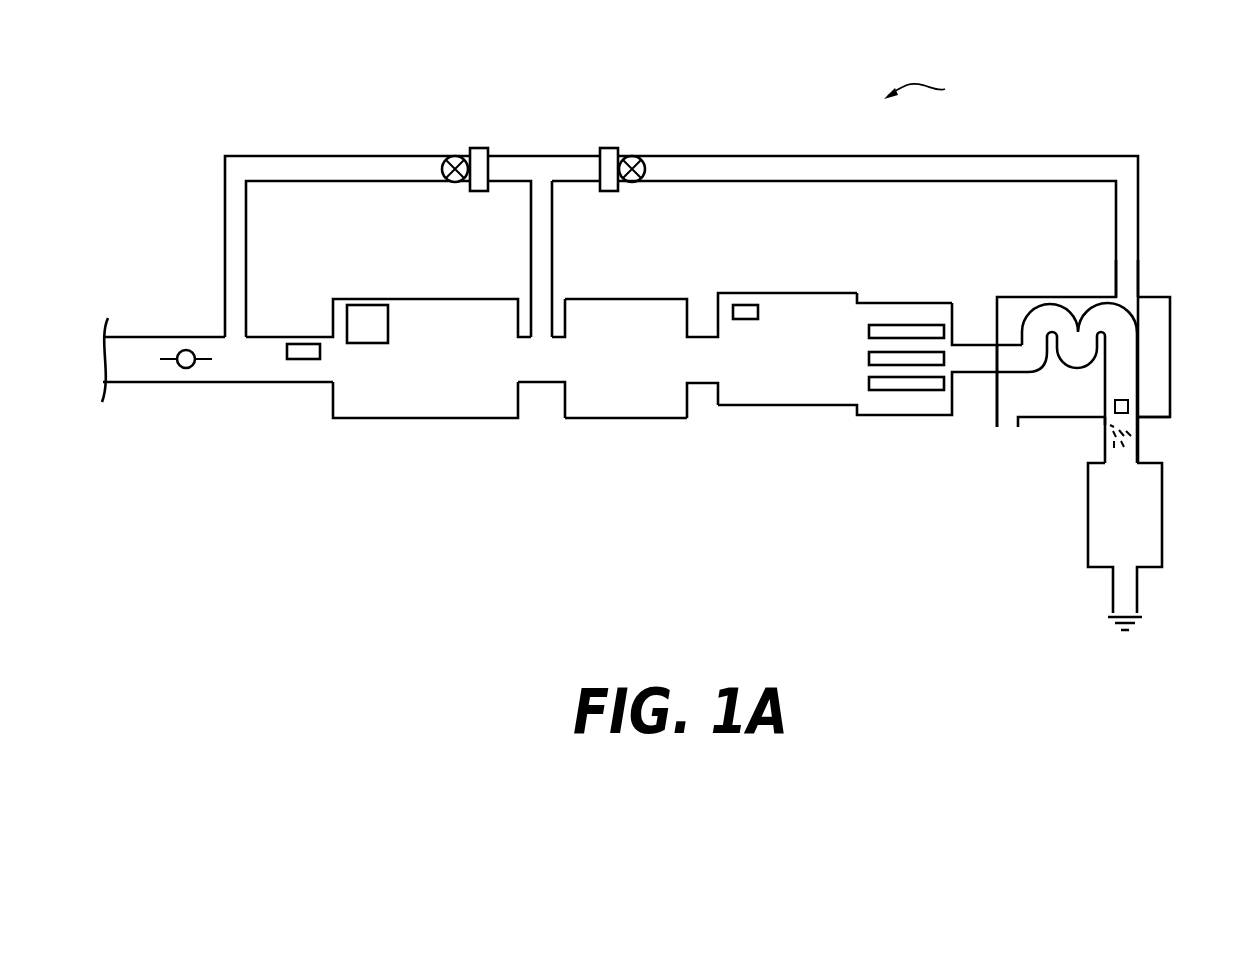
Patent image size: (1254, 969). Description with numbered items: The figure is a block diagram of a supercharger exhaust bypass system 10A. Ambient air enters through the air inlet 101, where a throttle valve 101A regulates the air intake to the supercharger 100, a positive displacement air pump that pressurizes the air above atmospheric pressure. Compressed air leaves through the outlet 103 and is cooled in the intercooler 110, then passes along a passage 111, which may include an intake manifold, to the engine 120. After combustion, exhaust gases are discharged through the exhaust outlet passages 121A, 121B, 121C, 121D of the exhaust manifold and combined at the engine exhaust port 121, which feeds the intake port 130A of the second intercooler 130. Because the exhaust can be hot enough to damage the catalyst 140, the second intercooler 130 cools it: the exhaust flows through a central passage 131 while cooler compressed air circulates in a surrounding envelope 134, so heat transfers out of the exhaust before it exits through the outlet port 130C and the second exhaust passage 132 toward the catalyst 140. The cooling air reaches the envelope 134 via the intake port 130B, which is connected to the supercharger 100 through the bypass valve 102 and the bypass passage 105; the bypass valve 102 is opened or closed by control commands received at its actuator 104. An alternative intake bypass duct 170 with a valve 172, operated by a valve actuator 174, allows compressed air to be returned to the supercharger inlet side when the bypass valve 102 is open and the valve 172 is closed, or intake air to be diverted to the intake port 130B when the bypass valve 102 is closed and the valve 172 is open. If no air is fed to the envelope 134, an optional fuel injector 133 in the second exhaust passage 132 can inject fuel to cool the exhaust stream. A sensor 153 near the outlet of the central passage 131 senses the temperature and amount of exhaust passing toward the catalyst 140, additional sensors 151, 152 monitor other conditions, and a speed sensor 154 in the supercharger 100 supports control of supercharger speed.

The supercharger exhaust bypass system 10A is at (933, 88).
The supercharger 100 is at (433, 389).
The air inlet 101 is at (123, 385).
The throttle valve 101A is at (188, 350).
The bypass valve 102 is at (451, 156).
The outlet 103 is at (520, 385).
The actuator 104 is at (478, 148).
The bypass passage 105 is at (820, 157).
The intercooler 110 is at (592, 298).
The passage 111 is at (702, 337).
The engine 120 is at (758, 393).
The engine exhaust port 121 is at (965, 342).
The exhaust outlet passage 121A is at (870, 315).
The exhaust outlet passage 121B is at (895, 345).
The exhaust outlet passage 121C is at (892, 372).
The exhaust outlet passage 121D is at (925, 405).
The second intercooler 130 is at (1172, 320).
The intake port 130A is at (993, 373).
The intake port 130B is at (1138, 293).
The outlet port 130C is at (1105, 418).
The central passage 131 is at (1130, 360).
The second exhaust passage 132 is at (1137, 424).
The fuel injector 133 is at (1103, 436).
The envelope 134 is at (1157, 396).
The catalyst 140 is at (1150, 521).
The sensor 151 is at (307, 346).
The sensor 152 is at (748, 305).
The sensor 153 is at (1115, 405).
The speed sensor 154 is at (383, 339).
The intake bypass duct 170 is at (333, 157).
The valve 172 is at (645, 158).
The valve actuator 174 is at (612, 148).